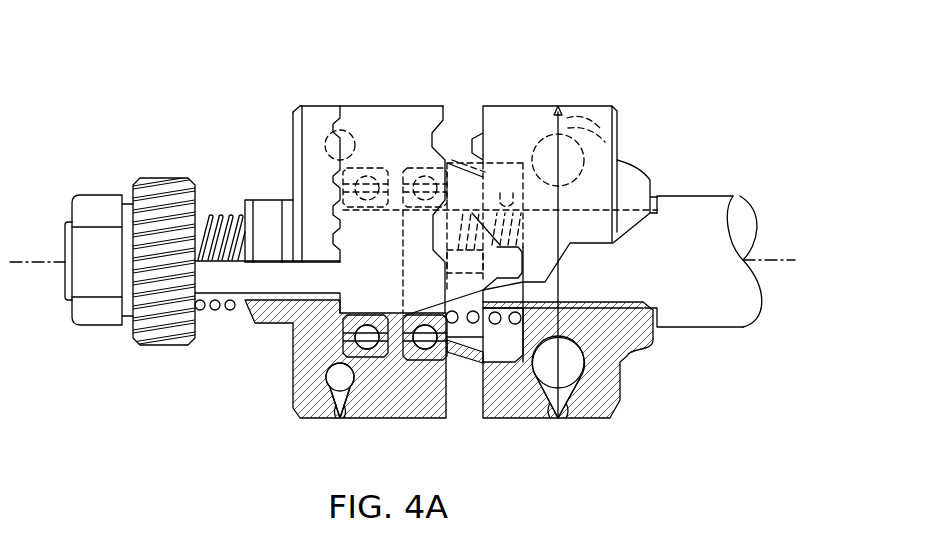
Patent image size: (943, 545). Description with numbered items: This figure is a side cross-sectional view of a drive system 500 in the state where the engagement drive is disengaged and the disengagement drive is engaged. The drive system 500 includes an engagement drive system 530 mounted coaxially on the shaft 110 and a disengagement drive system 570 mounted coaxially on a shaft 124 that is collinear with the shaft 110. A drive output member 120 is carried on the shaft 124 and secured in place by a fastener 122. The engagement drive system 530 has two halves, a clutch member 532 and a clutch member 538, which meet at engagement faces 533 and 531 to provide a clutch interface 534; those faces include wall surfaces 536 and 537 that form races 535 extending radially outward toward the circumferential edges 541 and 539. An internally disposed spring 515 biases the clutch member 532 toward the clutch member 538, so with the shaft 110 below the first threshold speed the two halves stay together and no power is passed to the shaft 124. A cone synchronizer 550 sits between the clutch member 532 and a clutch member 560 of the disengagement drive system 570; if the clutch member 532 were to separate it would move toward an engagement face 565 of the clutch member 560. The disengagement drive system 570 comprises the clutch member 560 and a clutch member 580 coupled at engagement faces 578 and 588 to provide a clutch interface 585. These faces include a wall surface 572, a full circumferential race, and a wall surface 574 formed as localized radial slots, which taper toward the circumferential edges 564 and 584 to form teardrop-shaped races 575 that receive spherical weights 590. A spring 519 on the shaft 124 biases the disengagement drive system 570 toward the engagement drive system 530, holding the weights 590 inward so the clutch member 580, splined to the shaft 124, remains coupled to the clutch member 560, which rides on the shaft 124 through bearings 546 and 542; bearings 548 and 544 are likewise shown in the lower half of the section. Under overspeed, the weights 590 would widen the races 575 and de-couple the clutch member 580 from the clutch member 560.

The drive system 500 is at (715, 94).
The shaft 110 is at (740, 327).
The drive output member 120 is at (152, 345).
The fastener 122 is at (92, 327).
The shaft 124 is at (243, 262).
The spring 515 is at (500, 163).
The spring 519 is at (223, 217).
The engagement drive system 530 is at (646, 428).
The engagement face 531 is at (566, 412).
The clutch member 532 is at (512, 106).
The engagement face 533 is at (548, 418).
The clutch interface 534 is at (558, 106).
The race 535 is at (606, 142).
The wall surface 536 is at (602, 128).
The wall surface 537 is at (545, 138).
The clutch member 538 is at (614, 106).
The circumferential edge 539 is at (612, 418).
The circumferential edge 541 is at (490, 418).
The bearing 542 is at (423, 166).
The bearing 544 is at (396, 319).
The bearing 546 is at (398, 168).
The bearing 548 is at (356, 338).
The cone synchronizer 550 is at (468, 365).
The clutch member 560 is at (437, 106).
The circumferential edge 564 is at (372, 106).
The engagement face 565 is at (436, 130).
The disengagement drive system 570 is at (274, 432).
The wall surface 572 is at (343, 402).
The wall surface 574 is at (331, 398).
The race 575 is at (352, 400).
The engagement face 578 is at (340, 232).
The clutch member 580 is at (302, 107).
The circumferential edge 584 is at (312, 106).
The clutch interface 585 is at (341, 106).
The engagement face 588 is at (340, 203).
The weights 590 is at (330, 385).